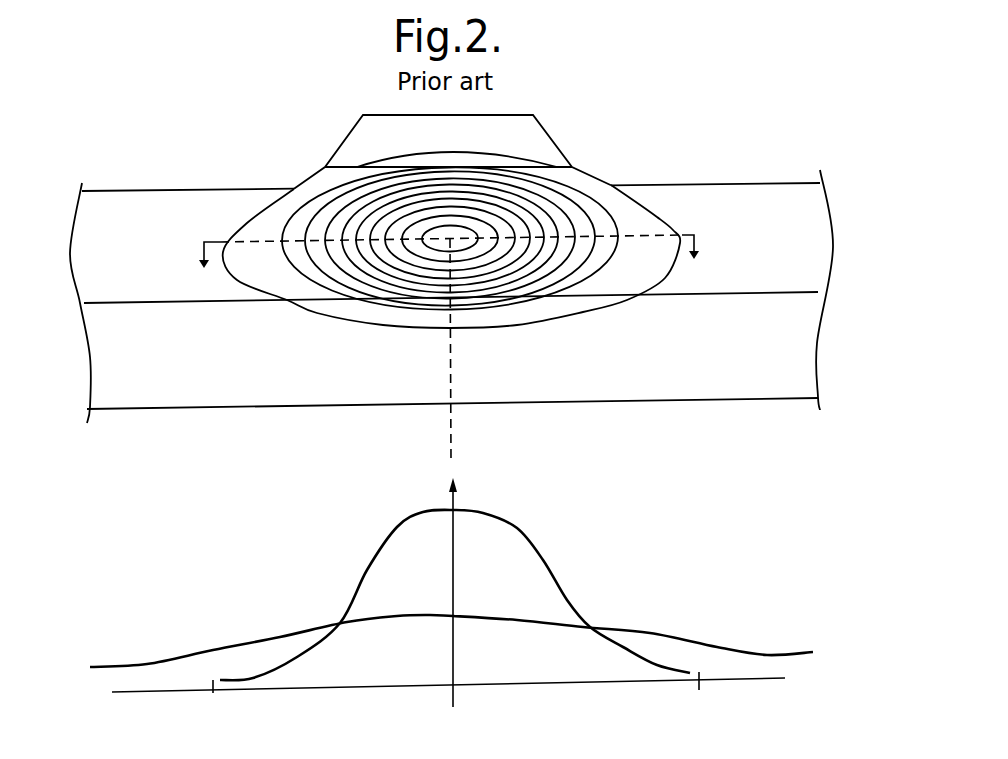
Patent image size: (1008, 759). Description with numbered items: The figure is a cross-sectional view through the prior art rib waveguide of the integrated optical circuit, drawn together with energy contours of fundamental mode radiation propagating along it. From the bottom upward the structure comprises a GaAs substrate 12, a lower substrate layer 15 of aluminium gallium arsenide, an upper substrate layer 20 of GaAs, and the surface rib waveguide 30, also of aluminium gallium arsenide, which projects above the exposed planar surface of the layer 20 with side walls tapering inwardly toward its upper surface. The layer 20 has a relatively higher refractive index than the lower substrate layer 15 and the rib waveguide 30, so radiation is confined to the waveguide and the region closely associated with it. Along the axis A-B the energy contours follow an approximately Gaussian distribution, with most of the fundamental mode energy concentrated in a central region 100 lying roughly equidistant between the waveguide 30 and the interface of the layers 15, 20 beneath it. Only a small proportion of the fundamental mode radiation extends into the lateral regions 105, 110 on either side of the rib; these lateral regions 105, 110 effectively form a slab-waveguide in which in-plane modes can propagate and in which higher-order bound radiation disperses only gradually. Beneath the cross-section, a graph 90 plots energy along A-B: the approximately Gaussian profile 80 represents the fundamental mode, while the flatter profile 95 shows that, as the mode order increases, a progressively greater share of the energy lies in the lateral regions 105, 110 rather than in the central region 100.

The GaAs substrate 12 is at (701, 430).
The lower substrate layer 15 is at (701, 375).
The upper substrate layer 20 is at (746, 192).
The surface rib waveguide 30 is at (373, 131).
The central region 100 is at (440, 236).
The lateral region 105 is at (162, 258).
The lateral region 110 is at (757, 255).
The Gaussian profile 80 is at (547, 560).
The graph 90 is at (451, 598).
The profile 95 is at (650, 633).